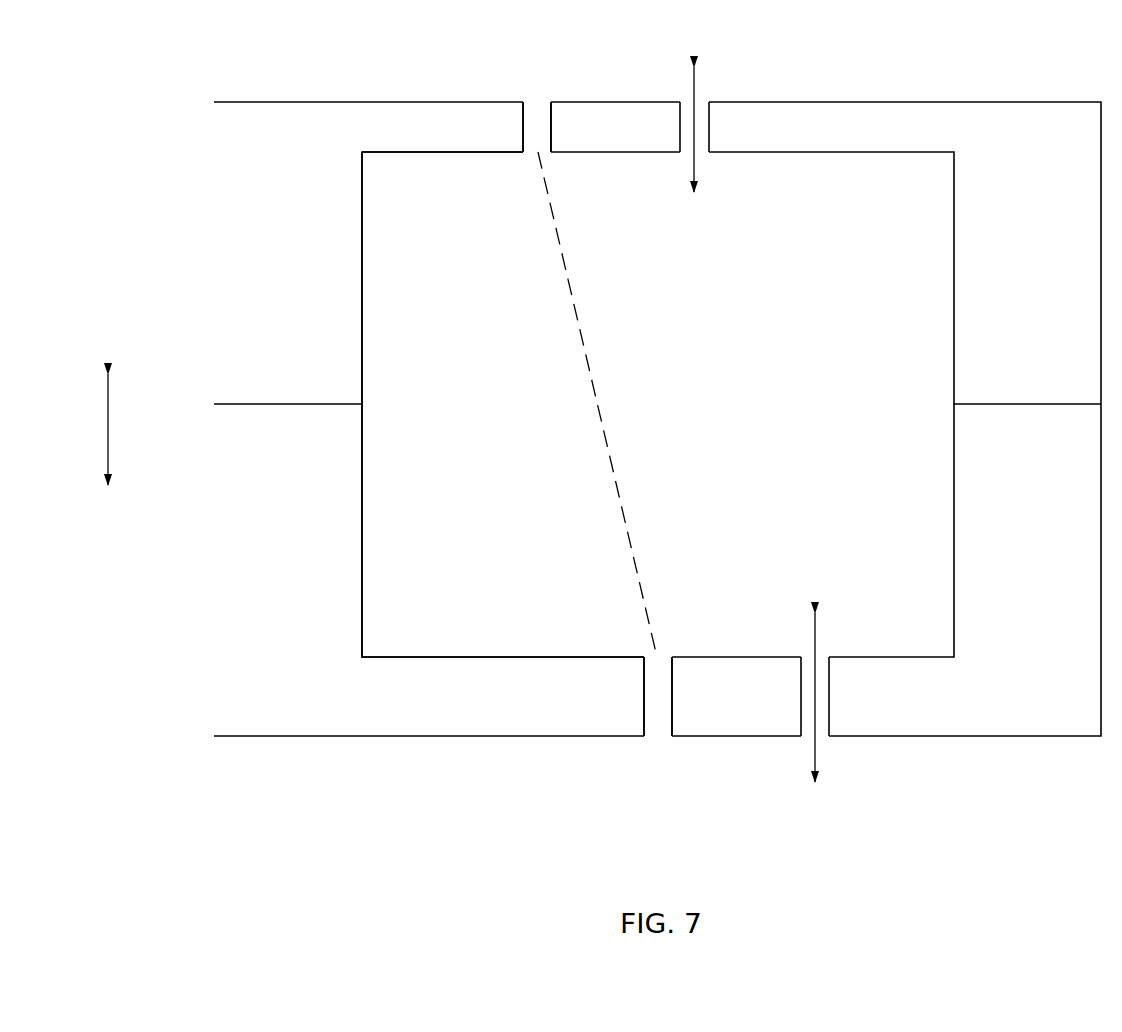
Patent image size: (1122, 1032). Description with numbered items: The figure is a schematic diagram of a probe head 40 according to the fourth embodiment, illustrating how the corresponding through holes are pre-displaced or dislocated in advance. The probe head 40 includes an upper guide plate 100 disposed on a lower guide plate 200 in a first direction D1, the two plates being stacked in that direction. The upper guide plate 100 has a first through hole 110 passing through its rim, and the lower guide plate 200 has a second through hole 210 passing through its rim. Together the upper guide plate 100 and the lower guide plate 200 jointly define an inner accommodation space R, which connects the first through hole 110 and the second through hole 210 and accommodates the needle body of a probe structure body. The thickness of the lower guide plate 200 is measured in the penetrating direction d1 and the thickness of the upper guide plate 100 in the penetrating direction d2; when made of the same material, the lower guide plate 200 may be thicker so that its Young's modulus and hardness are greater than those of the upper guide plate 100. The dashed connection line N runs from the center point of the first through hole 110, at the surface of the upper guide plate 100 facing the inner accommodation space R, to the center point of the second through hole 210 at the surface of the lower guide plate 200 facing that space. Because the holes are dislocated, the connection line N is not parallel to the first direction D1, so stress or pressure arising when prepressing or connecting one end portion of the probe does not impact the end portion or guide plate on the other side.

The probe head 40 is at (183, 46).
The upper guide plate 100 is at (1063, 251).
The lower guide plate 200 is at (1064, 647).
The first through hole 110 is at (537, 100).
The second through hole 210 is at (657, 736).
The connection line N is at (568, 290).
The inner accommodation space R is at (479, 577).
The penetrating direction d1 is at (689, 111).
The penetrating direction d2 is at (815, 716).
The first direction D1 is at (89, 429).